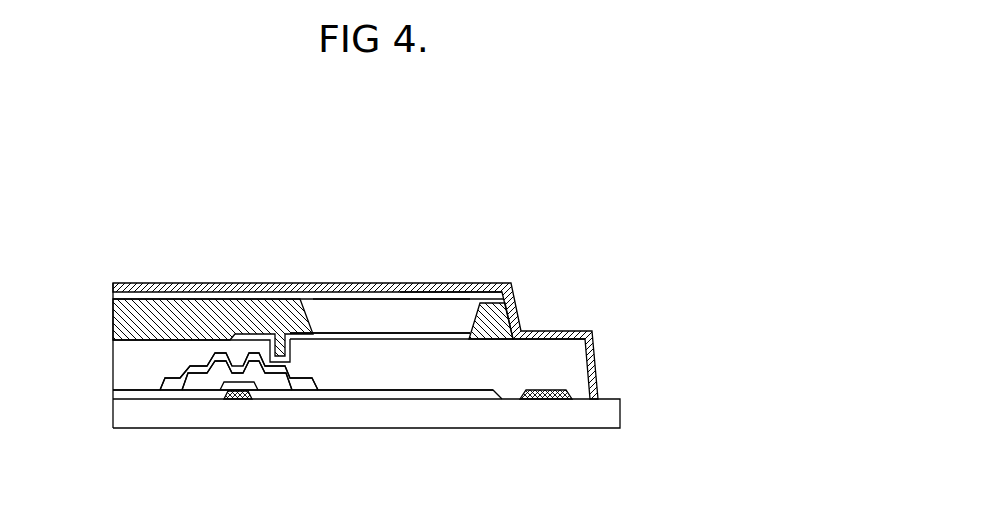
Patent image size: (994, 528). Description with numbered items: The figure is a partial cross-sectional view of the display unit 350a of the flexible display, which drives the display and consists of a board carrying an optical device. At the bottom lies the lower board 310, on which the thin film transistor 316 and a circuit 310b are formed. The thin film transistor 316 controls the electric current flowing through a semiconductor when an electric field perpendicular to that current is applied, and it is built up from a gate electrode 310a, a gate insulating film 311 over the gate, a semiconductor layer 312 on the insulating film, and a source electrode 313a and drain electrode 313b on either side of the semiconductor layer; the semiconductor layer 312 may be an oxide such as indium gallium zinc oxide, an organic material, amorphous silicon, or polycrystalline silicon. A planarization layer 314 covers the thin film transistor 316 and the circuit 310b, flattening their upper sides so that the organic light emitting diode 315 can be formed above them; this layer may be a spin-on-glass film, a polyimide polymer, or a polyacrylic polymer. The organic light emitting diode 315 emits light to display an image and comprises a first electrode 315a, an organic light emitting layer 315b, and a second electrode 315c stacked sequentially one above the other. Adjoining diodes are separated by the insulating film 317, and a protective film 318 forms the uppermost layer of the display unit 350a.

The display unit 350a is at (589, 142).
The protective film 318 is at (118, 289).
The insulating film 317 is at (155, 312).
The organic light emitting diode 315 is at (470, 211).
The first electrode 315a is at (332, 333).
The organic light emitting layer 315b is at (392, 315).
The second electrode 315c is at (455, 300).
The planarization layer 314 is at (148, 362).
The thin film transistor 316 is at (403, 475).
The source electrode 313a is at (172, 388).
The drain electrode 313b is at (310, 386).
The semiconductor layer 312 is at (282, 386).
The gate insulating film 311 is at (467, 396).
The gate electrode 310a is at (240, 395).
The circuit 310b is at (542, 397).
The lower board 310 is at (613, 411).